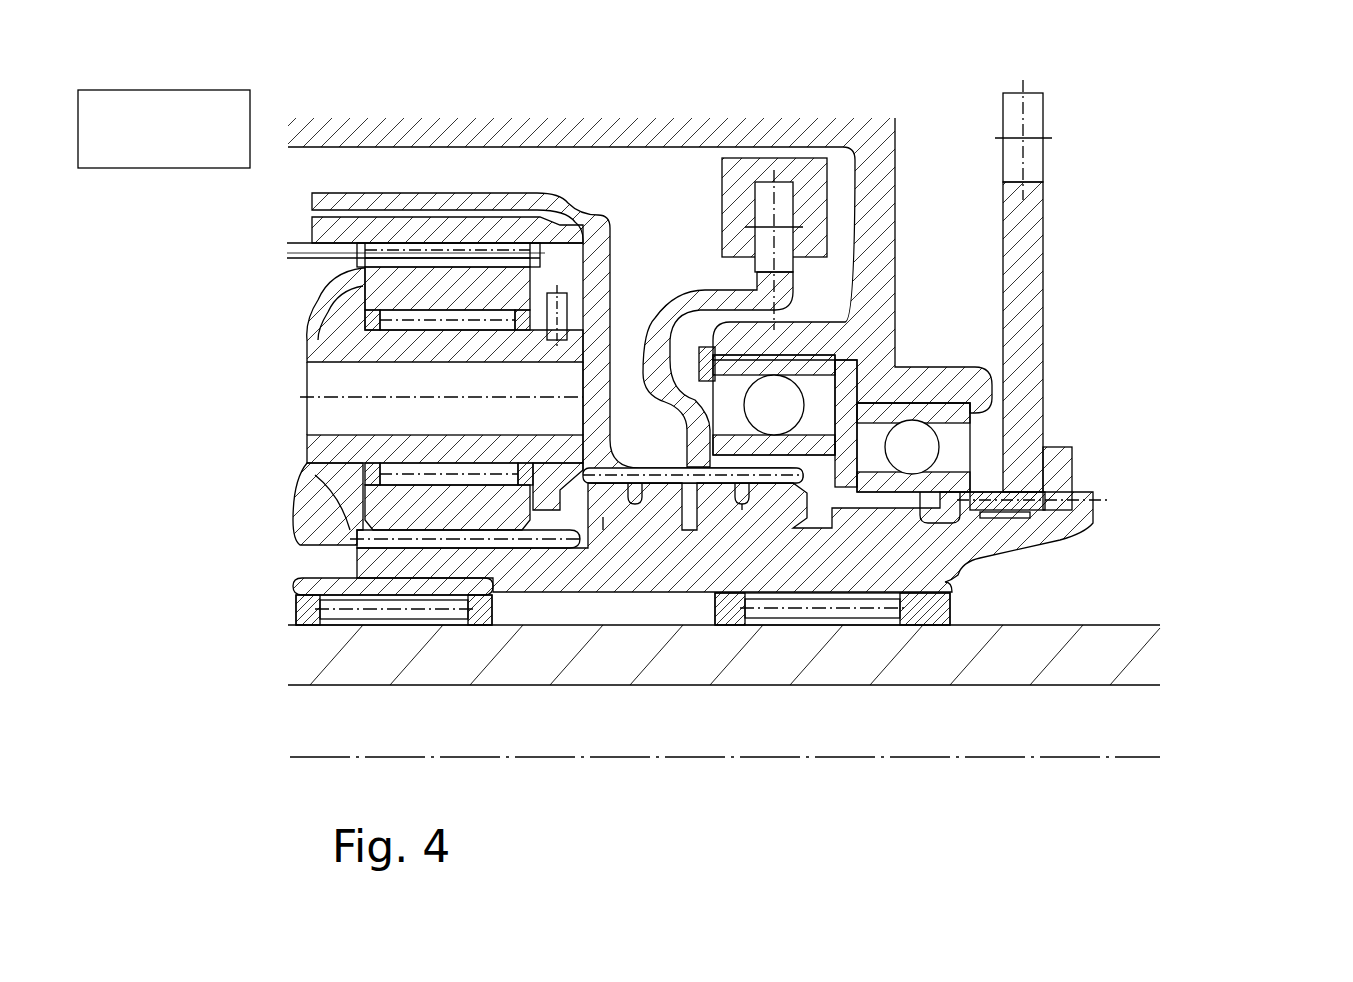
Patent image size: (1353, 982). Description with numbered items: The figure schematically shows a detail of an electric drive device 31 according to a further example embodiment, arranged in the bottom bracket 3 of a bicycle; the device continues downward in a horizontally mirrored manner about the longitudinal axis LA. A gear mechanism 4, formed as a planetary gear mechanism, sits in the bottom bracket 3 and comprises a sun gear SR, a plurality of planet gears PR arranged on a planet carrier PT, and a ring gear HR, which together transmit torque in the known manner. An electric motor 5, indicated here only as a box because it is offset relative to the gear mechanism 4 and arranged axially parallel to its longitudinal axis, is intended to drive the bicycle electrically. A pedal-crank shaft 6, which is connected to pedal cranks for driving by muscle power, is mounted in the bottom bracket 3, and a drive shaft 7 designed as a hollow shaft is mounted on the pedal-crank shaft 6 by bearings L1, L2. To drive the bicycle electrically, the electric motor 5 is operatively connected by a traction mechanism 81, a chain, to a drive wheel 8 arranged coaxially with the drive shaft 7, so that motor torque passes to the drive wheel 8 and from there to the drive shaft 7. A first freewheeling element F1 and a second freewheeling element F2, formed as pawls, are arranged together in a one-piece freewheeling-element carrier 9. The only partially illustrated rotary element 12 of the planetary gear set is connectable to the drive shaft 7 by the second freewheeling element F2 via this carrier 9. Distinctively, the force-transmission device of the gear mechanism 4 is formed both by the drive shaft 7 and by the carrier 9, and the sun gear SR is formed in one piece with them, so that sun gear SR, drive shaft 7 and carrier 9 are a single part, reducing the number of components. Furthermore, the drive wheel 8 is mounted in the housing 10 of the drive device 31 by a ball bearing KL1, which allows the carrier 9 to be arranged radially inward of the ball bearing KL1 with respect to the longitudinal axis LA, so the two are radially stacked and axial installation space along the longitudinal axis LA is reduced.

The bottom bracket 3 is at (1122, 134).
The gear mechanism 4 is at (160, 397).
The electric motor 5 is at (164, 129).
The pedal-crank shaft 6 is at (1122, 742).
The drive shaft 7 is at (960, 565).
The drive wheel 8 is at (757, 182).
The one-piece freewheeling-element carrier 9 is at (680, 570).
The housing 10 is at (873, 155).
The rotary element 12 is at (438, 200).
The electric drive device 31 is at (1170, 540).
The traction mechanism 81 is at (813, 158).
The ring gear HR is at (372, 235).
The planet carrier PT is at (335, 313).
The planet gears PR is at (400, 497).
The sun gear SR is at (418, 570).
The ball bearing KL1 is at (817, 418).
The bearing L1 is at (288, 622).
The bearing L2 is at (845, 612).
The first freewheeling element F1 is at (748, 510).
The second freewheeling element F2 is at (605, 530).
The longitudinal axis LA is at (1103, 760).